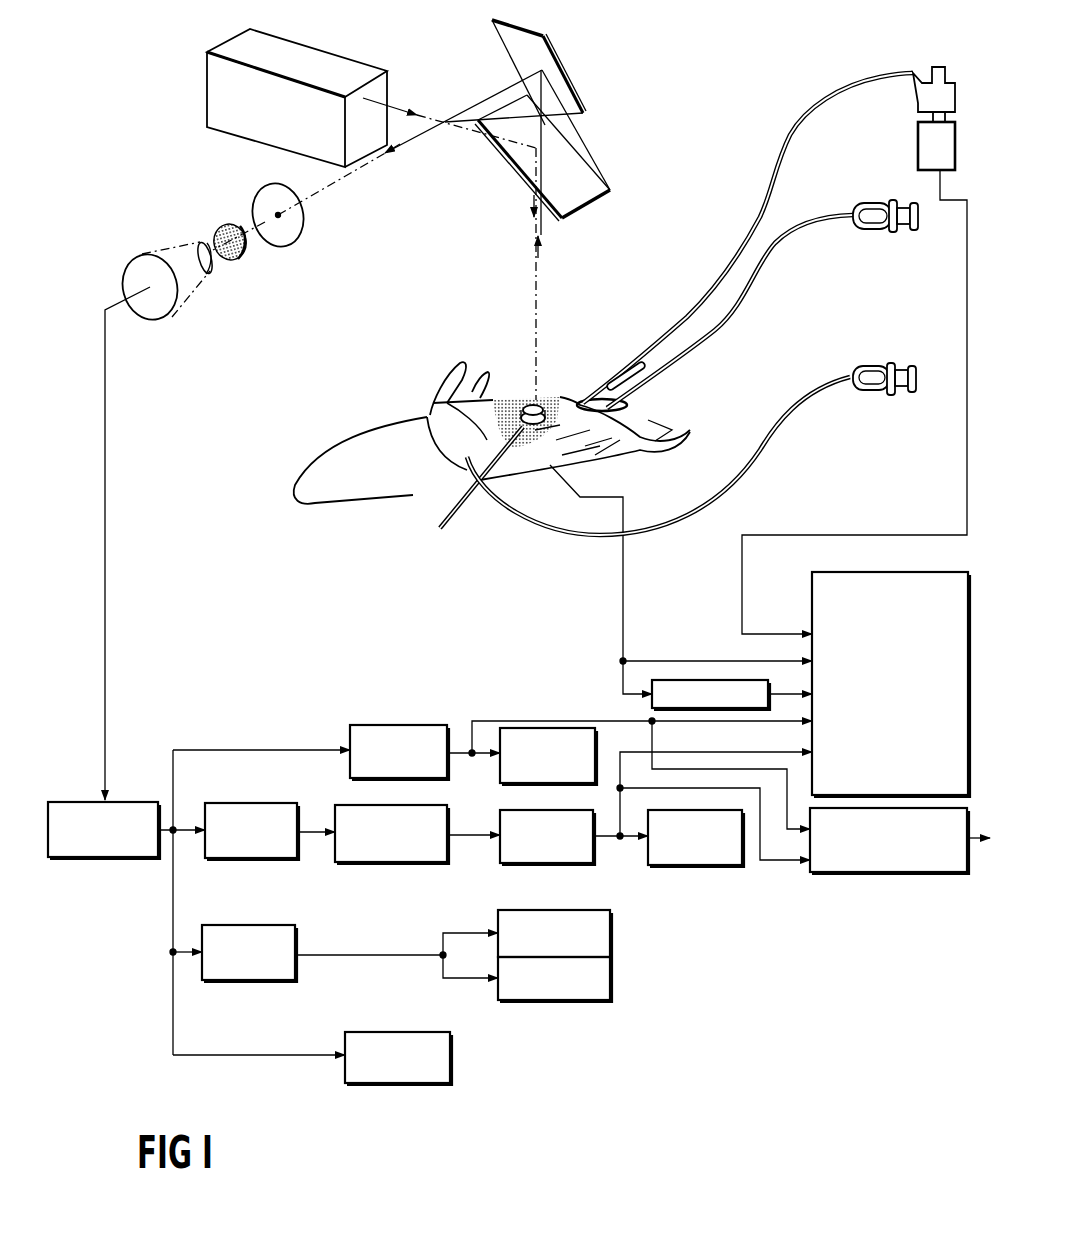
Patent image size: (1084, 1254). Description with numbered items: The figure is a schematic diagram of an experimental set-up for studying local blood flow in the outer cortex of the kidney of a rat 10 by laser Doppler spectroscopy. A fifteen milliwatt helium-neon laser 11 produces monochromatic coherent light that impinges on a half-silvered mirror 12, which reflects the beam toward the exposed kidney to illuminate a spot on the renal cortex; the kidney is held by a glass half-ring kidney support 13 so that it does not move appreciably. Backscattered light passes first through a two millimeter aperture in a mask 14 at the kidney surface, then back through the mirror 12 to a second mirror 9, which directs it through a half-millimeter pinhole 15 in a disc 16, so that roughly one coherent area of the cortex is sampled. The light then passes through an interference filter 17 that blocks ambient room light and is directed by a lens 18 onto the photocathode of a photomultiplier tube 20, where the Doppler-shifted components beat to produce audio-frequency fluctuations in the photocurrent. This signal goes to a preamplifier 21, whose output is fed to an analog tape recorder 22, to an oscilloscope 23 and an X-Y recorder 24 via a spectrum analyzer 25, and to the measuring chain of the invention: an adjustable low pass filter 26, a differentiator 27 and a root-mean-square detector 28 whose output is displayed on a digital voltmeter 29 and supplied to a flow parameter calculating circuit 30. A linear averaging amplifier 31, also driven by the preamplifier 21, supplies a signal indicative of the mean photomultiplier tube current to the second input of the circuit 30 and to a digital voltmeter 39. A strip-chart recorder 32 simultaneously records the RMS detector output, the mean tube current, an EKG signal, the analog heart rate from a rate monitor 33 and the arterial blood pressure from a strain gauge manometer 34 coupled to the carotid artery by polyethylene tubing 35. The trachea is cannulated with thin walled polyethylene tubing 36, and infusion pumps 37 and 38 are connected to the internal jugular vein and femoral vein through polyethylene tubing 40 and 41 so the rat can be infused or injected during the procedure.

The second mirror 9 is at (556, 66).
The rat 10 is at (447, 278).
The helium-neon laser 11 is at (313, 57).
The half-silvered mirror 12 is at (574, 175).
The glass half-ring kidney support 13 is at (518, 433).
The mask 14 is at (537, 403).
The pinhole 15 is at (276, 218).
The disc 16 is at (303, 228).
The interference filter 17 is at (230, 258).
The lens 18 is at (197, 243).
The photomultiplier tube 20 is at (193, 294).
The preamplifier 21 is at (128, 802).
The analog tape recorder 22 is at (423, 1030).
The oscilloscope 23 is at (613, 982).
The X-Y recorder 24 is at (613, 933).
The spectrum analyzer 25 is at (263, 923).
The adjustable low pass filter 26 is at (262, 803).
The differentiator 27 is at (417, 865).
The root-mean-square detector 28 is at (565, 867).
The digital voltmeter 29 is at (722, 872).
The flow parameter calculating circuit 30 is at (933, 875).
The linear averaging amplifier 31 is at (412, 724).
The strip-chart recorder 32 is at (813, 588).
The rate monitor 33 is at (667, 680).
The strain gauge manometer 34 is at (913, 105).
The polyethylene tubing 35 is at (763, 183).
The thin walled polyethylene tubing 36 is at (632, 380).
The infusion pump 37 is at (863, 201).
The infusion pump 38 is at (863, 364).
The digital voltmeter 39 is at (500, 771).
The polyethylene tubing 40 is at (813, 227).
The polyethylene tubing 41 is at (803, 393).